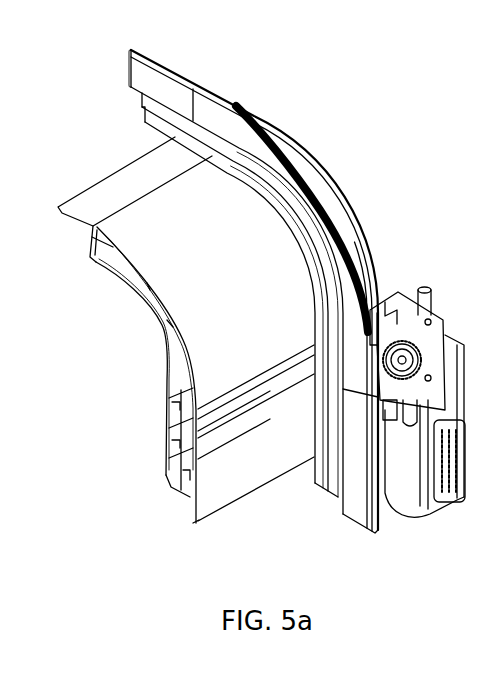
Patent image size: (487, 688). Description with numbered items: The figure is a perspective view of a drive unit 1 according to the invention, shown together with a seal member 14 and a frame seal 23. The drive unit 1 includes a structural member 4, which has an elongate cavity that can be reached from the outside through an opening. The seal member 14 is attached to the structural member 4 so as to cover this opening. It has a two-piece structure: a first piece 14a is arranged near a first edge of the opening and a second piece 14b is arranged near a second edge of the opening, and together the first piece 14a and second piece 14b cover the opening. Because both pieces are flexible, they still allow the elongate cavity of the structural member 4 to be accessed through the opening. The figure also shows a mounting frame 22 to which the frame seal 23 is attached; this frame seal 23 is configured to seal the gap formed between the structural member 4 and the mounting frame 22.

The drive unit 1 is at (366, 132).
The mounting frame 22 is at (238, 130).
The frame seal 23 is at (157, 127).
The structural member 4 is at (122, 280).
The seal member 14 is at (150, 427).
The first piece 14a is at (217, 407).
The second piece 14b is at (217, 443).